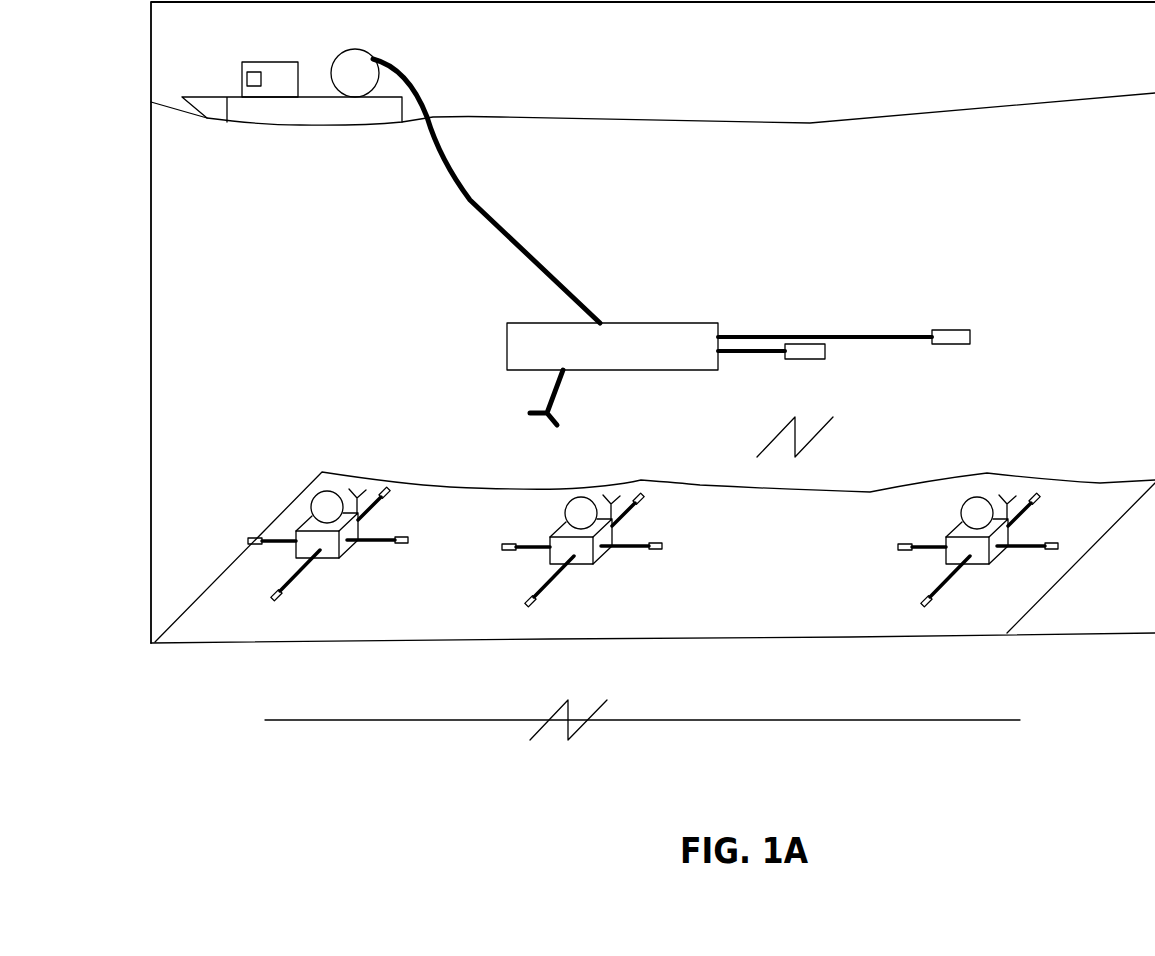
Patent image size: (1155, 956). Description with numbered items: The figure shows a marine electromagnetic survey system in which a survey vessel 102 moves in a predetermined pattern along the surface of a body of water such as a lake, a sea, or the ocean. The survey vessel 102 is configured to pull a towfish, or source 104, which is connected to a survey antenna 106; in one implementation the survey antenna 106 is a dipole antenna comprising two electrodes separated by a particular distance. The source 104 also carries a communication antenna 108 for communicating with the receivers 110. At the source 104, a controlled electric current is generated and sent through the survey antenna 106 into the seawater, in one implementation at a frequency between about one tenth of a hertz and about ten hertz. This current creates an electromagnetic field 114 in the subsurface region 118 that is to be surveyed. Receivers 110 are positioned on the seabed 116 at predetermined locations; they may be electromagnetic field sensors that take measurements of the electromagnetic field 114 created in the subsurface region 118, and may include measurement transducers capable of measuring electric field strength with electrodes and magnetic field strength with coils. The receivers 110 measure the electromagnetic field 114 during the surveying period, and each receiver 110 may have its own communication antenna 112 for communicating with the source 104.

The survey vessel 102 is at (267, 62).
The towfish (source) 104 is at (627, 323).
The survey antenna 106 is at (815, 337).
The communication antenna 108 is at (558, 393).
The receivers 110 is at (317, 493).
The communication antenna 112 is at (357, 495).
The electromagnetic field 114 is at (775, 438).
The seabed 116 is at (815, 605).
The subsurface region 118 is at (420, 720).